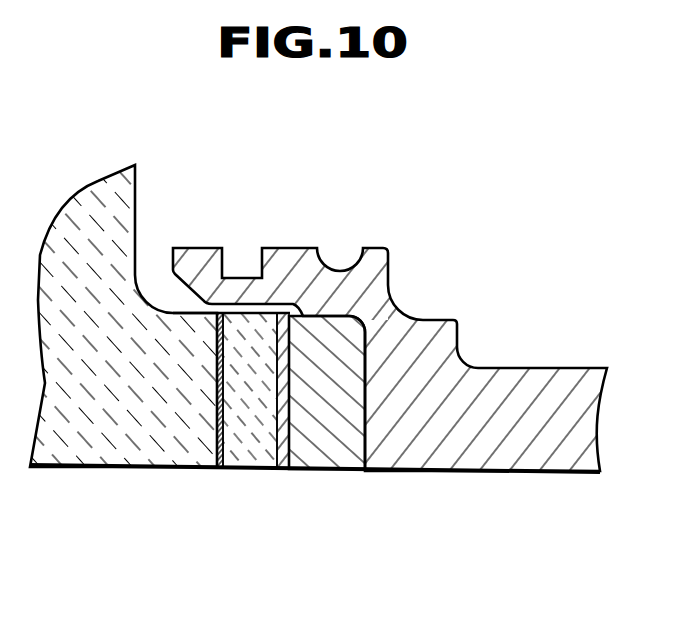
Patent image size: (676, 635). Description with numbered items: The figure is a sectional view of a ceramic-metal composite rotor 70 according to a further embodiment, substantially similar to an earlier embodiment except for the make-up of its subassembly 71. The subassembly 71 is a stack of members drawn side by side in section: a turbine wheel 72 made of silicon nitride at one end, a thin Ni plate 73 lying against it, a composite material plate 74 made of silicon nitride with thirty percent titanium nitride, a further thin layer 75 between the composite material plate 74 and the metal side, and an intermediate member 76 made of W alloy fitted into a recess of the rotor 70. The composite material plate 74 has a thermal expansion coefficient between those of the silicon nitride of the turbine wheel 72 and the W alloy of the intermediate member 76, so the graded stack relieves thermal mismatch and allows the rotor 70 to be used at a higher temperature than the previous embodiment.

The ceramic-metal composite rotor 70 is at (345, 222).
The subassembly 71 is at (207, 374).
The turbine wheel 72 is at (128, 457).
The Ni plate 73 is at (218, 460).
The composite material plate 74 is at (247, 465).
The reinforcing plate 75 is at (283, 465).
The intermediate member 76 is at (334, 425).